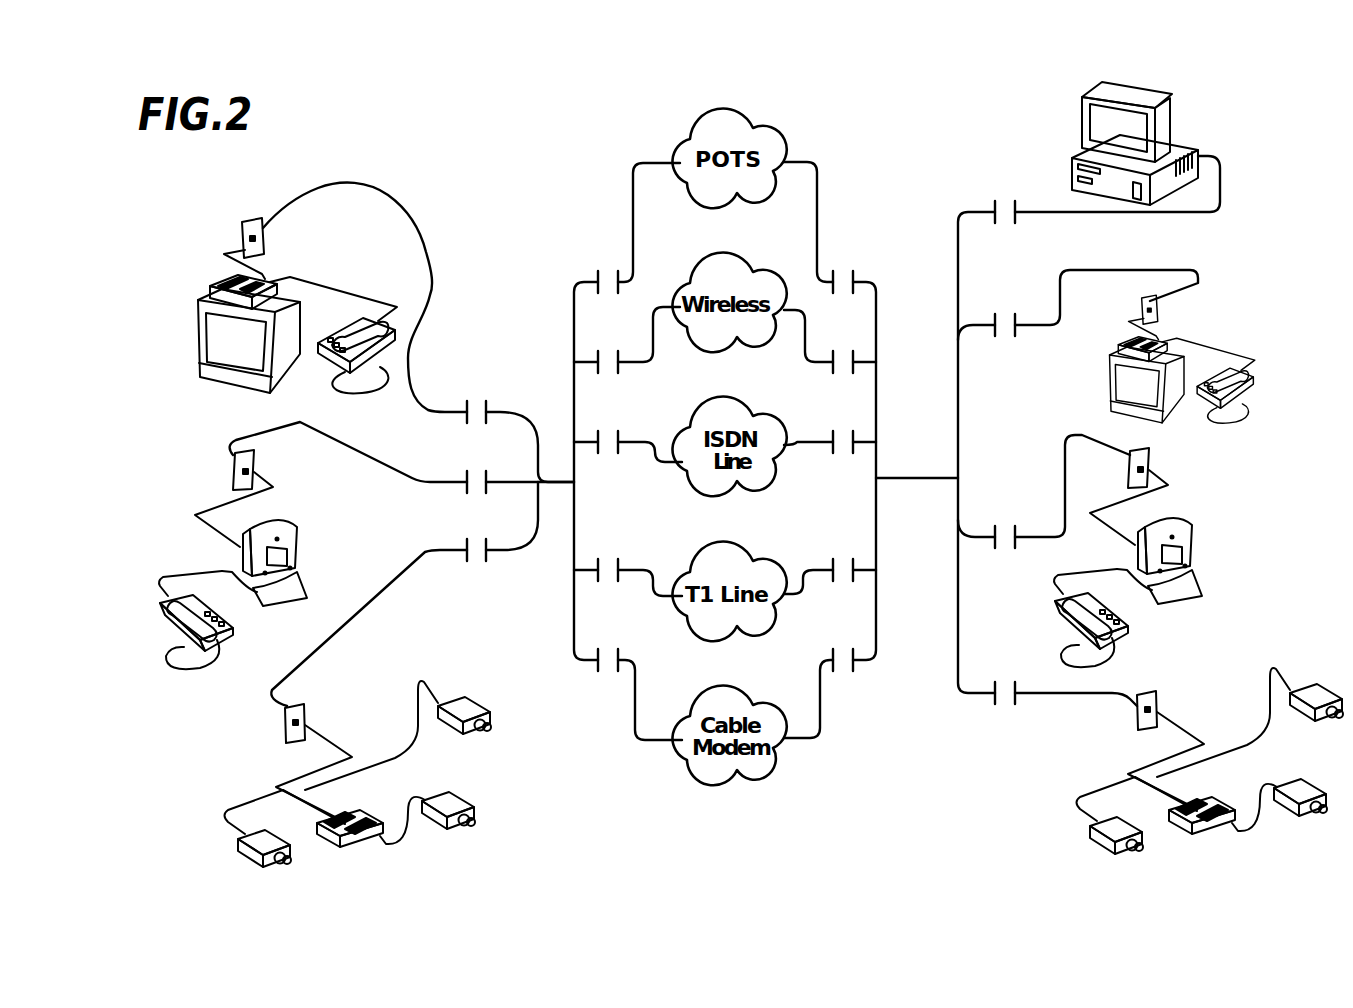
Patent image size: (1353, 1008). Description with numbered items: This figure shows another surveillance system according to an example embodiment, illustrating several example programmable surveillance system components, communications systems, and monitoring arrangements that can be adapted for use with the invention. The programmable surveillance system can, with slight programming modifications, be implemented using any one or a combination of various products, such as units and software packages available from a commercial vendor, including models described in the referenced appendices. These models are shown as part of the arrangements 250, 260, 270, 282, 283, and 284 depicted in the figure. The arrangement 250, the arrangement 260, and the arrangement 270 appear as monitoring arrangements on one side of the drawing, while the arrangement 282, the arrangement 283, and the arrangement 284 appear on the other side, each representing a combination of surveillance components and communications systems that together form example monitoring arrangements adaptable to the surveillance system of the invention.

The arrangement 250 is at (202, 248).
The arrangement 260 is at (205, 478).
The arrangement 270 is at (279, 754).
The arrangement 282 is at (1236, 308).
The arrangement 283 is at (1215, 532).
The arrangement 284 is at (1237, 716).